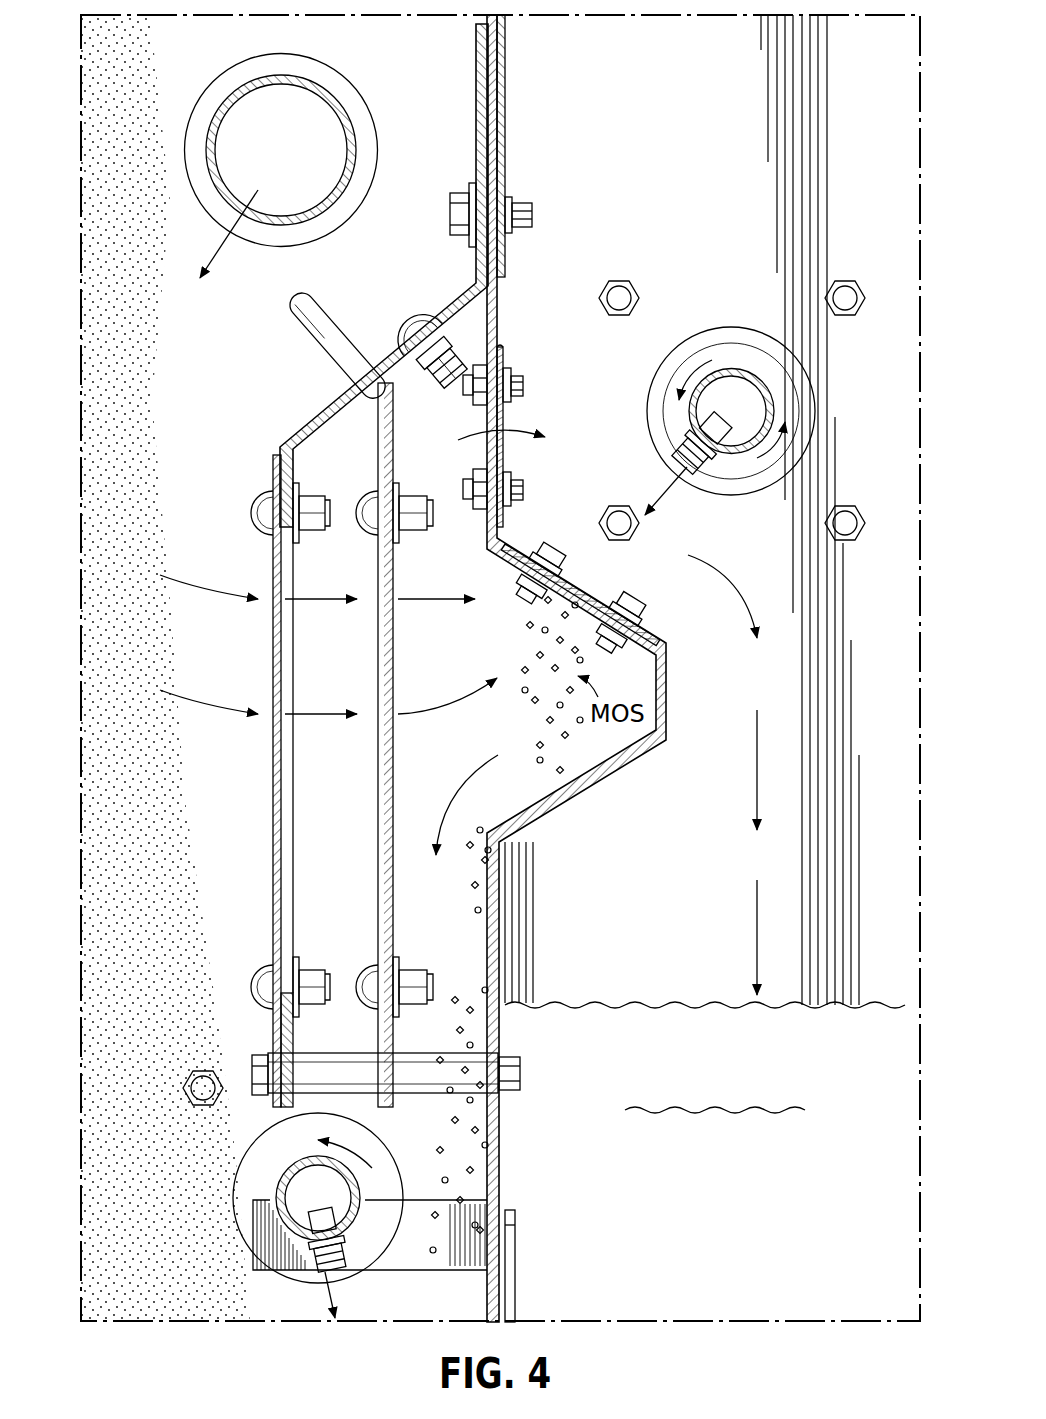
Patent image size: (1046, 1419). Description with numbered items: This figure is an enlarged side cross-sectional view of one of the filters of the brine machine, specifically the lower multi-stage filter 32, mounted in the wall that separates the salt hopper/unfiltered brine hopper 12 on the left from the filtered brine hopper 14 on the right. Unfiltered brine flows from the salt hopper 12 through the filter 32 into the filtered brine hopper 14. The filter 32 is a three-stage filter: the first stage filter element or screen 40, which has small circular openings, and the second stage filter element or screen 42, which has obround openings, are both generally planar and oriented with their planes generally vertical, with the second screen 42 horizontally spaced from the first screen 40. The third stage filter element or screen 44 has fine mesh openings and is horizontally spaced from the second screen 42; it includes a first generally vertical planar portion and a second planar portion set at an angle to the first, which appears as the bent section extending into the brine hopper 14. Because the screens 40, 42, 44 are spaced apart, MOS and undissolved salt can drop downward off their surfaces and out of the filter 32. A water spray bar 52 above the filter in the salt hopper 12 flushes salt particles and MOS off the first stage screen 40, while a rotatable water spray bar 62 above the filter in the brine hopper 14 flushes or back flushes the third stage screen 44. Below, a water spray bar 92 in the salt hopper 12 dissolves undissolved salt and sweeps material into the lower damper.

The salt hopper/unfiltered brine hopper 12 is at (107, 85).
The filtered brine hopper 14 is at (894, 127).
The lower multi-stage filter 32 is at (237, 447).
The first stage filter element or screen 40 is at (273, 757).
The second stage filter element or screen 42 is at (385, 757).
The third stage filter element or screen 44 is at (500, 440).
The water spray bar 52 is at (230, 100).
The rotatable water spray bar 62 is at (731, 370).
The water spray bar 92 is at (277, 1188).